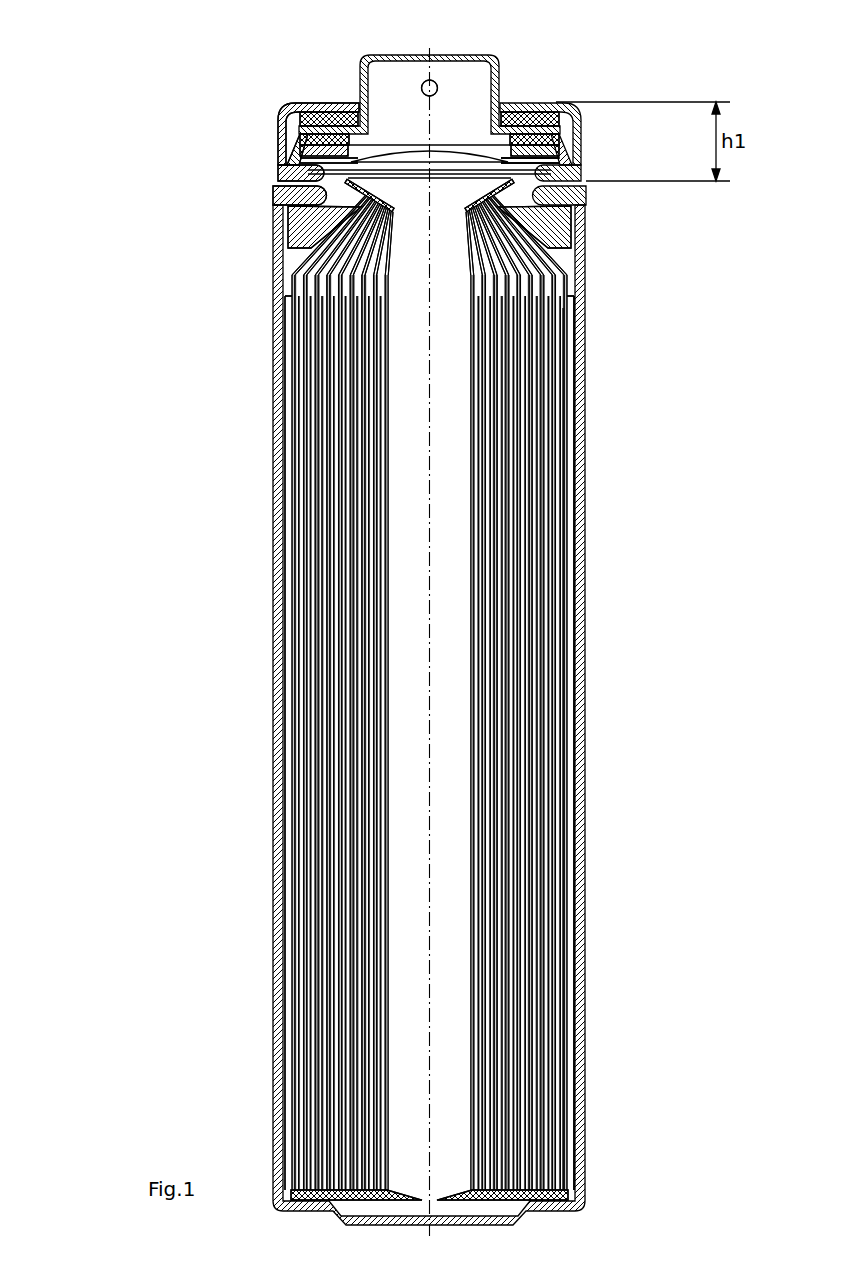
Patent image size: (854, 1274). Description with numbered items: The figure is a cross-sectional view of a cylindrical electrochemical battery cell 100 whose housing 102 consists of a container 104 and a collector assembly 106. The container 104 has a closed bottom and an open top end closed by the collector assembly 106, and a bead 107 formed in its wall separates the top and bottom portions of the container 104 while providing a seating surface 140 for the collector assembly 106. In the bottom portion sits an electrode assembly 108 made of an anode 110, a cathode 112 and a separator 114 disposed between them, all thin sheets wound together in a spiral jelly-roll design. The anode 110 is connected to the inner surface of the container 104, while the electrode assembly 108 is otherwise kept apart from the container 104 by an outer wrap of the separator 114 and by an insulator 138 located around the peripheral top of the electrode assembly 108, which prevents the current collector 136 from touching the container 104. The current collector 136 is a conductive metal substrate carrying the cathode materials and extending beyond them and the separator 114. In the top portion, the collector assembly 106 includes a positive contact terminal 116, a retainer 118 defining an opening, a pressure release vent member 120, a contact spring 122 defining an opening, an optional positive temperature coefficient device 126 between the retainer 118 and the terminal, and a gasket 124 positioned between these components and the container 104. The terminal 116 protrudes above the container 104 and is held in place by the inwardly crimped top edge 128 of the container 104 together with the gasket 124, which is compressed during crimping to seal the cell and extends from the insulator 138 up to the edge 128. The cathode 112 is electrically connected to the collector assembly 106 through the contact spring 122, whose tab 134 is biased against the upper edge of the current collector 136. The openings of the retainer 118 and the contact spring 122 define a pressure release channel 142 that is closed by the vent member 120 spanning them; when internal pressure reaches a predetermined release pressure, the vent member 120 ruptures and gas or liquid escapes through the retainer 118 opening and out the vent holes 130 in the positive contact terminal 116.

The electrochemical battery cell 100 is at (148, 70).
The housing 102 is at (225, 219).
The container 104 is at (267, 437).
The collector assembly 106 is at (316, 61).
The bead 107 is at (277, 183).
The electrode assembly 108 is at (303, 392).
The anode 110 is at (560, 297).
The cathode 112 is at (555, 343).
The separator 114 is at (560, 365).
The positive contact terminal 116 is at (358, 48).
The retainer 118 is at (270, 127).
The pressure release vent member 120 is at (410, 172).
The contact spring 122 is at (277, 157).
The gasket 124 is at (562, 130).
The positive temperature coefficient (PTC) device 126 is at (518, 113).
The crimped top edge 128 is at (297, 93).
The vent holes 130 is at (413, 81).
The tab 134 is at (458, 190).
The current collector 136 is at (558, 232).
The insulator 138 is at (290, 245).
The seating surface 140 is at (557, 163).
The pressure release channel 142 is at (439, 106).